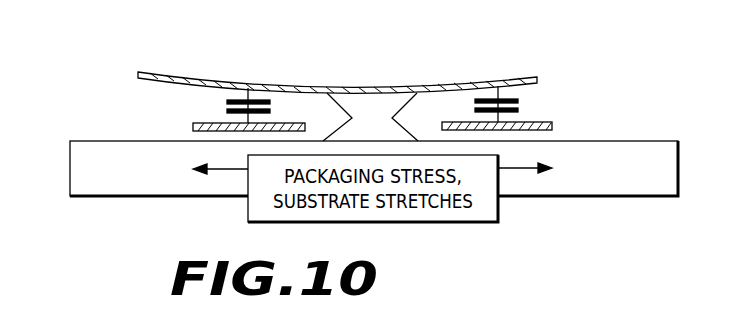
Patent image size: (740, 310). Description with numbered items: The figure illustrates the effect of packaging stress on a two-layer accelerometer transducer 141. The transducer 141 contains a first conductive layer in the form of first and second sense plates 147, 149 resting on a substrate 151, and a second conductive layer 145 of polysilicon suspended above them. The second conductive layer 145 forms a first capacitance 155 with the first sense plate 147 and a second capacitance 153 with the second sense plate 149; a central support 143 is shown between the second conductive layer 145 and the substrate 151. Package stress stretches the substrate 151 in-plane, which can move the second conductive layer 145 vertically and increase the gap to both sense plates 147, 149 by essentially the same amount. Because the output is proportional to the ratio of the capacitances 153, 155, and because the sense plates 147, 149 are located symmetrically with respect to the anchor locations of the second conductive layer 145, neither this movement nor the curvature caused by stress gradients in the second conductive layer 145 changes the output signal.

The transducer 141 is at (105, 42).
The solder joint / interconnect 143 is at (410, 98).
The second conductive layer 145 is at (198, 79).
The first sense plate 147 is at (200, 122).
The second sense plate 149 is at (552, 125).
The substrate 151 is at (654, 181).
The second capacitance 153 is at (519, 101).
The first capacitance 155 is at (271, 102).